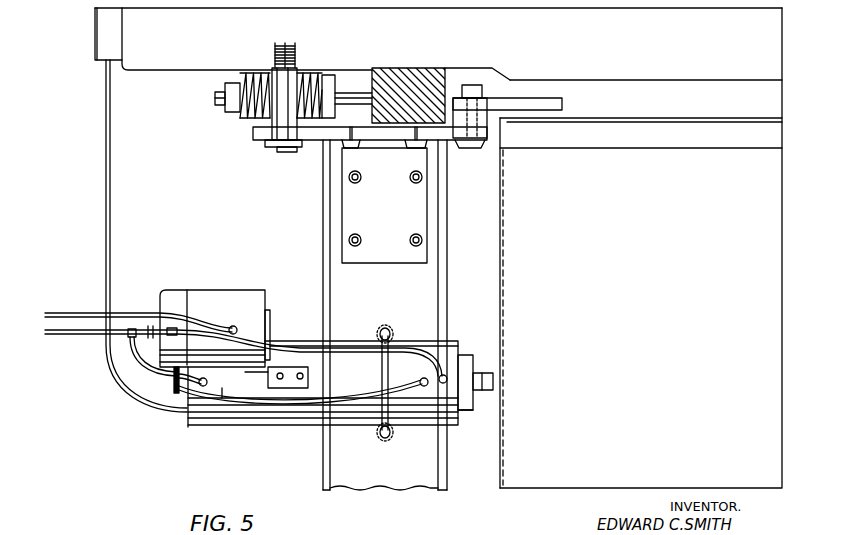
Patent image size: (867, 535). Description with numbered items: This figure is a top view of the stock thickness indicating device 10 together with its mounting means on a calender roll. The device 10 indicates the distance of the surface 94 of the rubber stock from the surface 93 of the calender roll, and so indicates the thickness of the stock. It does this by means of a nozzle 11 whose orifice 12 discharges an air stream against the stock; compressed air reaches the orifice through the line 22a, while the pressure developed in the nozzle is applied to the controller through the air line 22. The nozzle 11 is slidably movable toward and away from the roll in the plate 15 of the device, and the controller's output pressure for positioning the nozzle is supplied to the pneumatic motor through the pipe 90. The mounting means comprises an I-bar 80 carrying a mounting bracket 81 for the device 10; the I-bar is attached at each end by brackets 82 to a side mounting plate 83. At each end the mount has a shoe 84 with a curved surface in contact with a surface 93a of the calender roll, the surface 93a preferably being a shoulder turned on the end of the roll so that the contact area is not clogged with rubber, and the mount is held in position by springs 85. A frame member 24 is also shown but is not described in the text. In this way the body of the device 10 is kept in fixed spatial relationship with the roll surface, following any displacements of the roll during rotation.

The device 10 is at (362, 336).
The nozzle 11 is at (483, 405).
The orifice 12 is at (492, 372).
The plate 15 is at (465, 355).
The air line 22 is at (311, 365).
The line 22a is at (410, 350).
The frame beam 24 is at (125, 47).
The I-bar 80 is at (323, 293).
The mounting bracket 81 is at (381, 434).
The brackets 82 is at (345, 212).
The side mounting plate 83 is at (260, 138).
The shoe 84 is at (565, 104).
The springs 85 is at (311, 70).
The pipe 90 is at (245, 404).
The surface of calender roll 93 is at (508, 207).
The surface 93a is at (672, 70).
The surface of rubber stock 94 is at (500, 247).